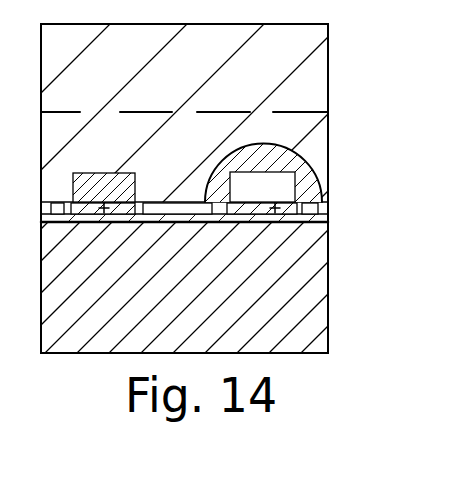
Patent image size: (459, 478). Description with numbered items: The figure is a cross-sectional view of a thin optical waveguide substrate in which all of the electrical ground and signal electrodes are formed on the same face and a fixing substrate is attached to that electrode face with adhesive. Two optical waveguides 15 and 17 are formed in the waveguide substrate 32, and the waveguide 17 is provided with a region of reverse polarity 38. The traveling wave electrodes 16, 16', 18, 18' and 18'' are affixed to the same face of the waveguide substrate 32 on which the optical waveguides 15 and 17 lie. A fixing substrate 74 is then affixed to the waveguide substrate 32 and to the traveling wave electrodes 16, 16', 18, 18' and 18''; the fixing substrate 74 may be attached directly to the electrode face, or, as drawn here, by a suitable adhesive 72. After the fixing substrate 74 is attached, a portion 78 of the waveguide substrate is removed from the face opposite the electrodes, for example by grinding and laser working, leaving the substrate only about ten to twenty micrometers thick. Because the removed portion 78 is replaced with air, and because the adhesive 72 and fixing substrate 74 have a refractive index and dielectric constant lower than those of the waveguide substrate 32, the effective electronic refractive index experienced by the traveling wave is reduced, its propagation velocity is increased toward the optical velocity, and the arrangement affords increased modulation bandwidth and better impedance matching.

The optical waveguide 15 is at (104, 173).
The traveling wave electrode 16 is at (105, 229).
The traveling wave electrode 16' is at (262, 230).
The optical waveguide 17 is at (212, 171).
The traveling wave electrode 18 is at (60, 233).
The traveling wave electrode 18' is at (180, 233).
The traveling wave electrode 18'' is at (307, 233).
The waveguide substrate 32 is at (320, 147).
The reverse polarity 38 is at (292, 143).
The adhesive 72 is at (322, 218).
The fixing substrate 74 is at (314, 284).
The waveguide substrate portion 78 is at (315, 78).